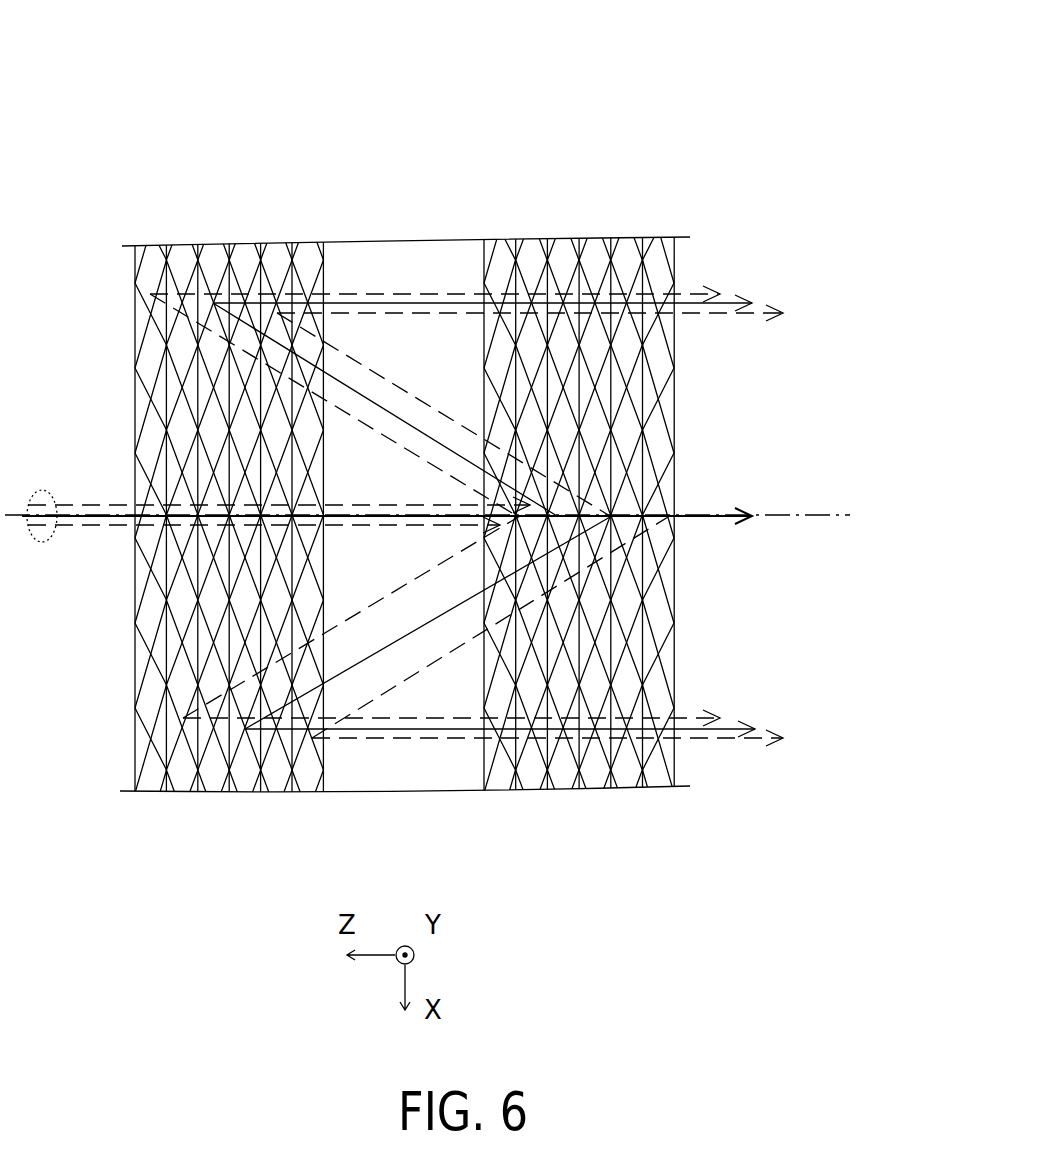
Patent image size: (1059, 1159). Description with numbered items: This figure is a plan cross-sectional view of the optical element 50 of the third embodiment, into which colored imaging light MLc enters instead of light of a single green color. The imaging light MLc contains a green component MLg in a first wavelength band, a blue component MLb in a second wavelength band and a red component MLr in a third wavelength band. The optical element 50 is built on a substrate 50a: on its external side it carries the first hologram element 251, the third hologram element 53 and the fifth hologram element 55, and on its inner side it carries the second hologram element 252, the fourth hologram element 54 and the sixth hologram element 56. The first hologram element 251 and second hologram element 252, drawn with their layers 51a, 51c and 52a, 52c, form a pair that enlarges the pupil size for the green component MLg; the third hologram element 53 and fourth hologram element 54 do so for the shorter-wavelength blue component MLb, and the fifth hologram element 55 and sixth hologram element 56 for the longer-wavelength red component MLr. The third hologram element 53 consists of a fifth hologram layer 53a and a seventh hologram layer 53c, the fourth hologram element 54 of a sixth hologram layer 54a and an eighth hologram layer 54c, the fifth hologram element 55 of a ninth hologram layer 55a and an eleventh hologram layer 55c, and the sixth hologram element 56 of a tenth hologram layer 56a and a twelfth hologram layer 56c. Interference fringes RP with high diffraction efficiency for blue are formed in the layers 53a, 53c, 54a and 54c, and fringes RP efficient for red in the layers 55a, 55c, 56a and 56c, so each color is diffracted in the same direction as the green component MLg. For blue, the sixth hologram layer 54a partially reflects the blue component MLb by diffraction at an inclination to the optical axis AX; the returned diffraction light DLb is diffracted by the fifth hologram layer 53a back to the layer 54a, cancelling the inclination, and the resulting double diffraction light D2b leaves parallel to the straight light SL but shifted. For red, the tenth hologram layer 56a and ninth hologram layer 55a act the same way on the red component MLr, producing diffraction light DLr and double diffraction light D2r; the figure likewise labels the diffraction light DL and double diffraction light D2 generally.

The optical element 50 is at (652, 100).
The substrate 50a is at (400, 265).
The first hologram element 251 is at (265, 128).
The second hologram element 252 is at (618, 128).
The fifth hologram element 55 is at (147, 172).
The ninth hologram layer 55a is at (150, 243).
The eleventh hologram layer 55c is at (182, 243).
The sub-region 51a is at (213, 243).
The sub-region 51c is at (245, 243).
The third hologram element 53 is at (308, 172).
The fifth hologram layer 53a is at (276, 243).
The seventh hologram layer 53c is at (308, 243).
The sixth hologram element 56 is at (451, 172).
The tenth hologram layer 56a is at (500, 243).
The twelfth hologram layer 56c is at (531, 243).
The sub-region 52a is at (563, 243).
The sub-region 52c is at (595, 243).
The fourth hologram element 54 is at (658, 172).
The sixth hologram layer 54a is at (627, 243).
The eighth hologram layer 54c is at (658, 243).
The interference fringes RP is at (142, 332).
The optical axis AX is at (790, 513).
The straight light SL is at (700, 520).
The red component MLr is at (78, 504).
The green component MLg is at (45, 518).
The blue component MLb is at (78, 528).
The colored imaging light MLc is at (42, 490).
The diffracted light DL is at (412, 420).
The diffraction light (red) DLr is at (378, 440).
The diffraction light (blue) DLb is at (450, 450).
The double diffraction light (red) D2r is at (718, 290).
The second deflected light D2 is at (748, 300).
The double diffraction light (blue) D2b is at (780, 310).